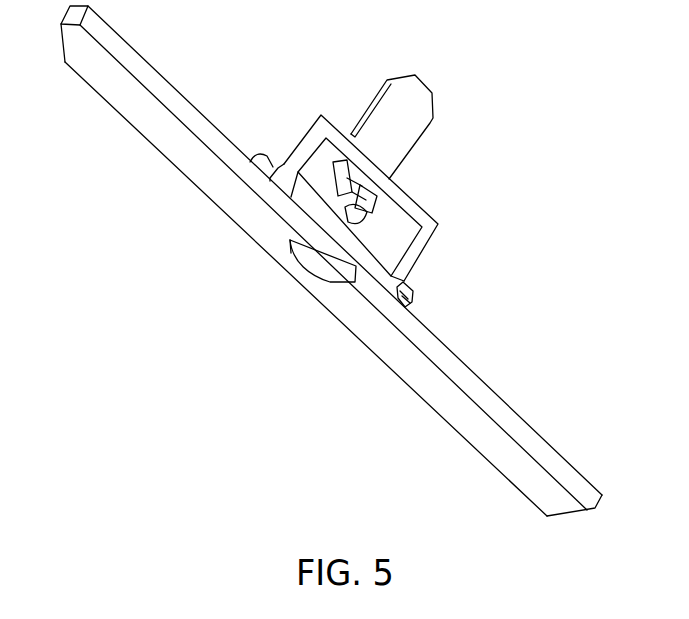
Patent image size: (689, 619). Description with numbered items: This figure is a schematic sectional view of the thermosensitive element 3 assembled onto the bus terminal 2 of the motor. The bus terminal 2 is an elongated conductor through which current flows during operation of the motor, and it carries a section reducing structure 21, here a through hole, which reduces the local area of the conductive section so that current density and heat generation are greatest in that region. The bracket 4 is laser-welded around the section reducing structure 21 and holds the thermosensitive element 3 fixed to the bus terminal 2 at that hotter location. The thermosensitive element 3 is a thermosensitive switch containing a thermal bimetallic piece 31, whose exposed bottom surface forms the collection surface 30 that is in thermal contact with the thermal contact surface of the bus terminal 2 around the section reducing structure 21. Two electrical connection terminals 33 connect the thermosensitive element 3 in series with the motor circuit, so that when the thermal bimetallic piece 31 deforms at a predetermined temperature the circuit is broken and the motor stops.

The bus terminal 2 is at (173, 148).
The section reducing structure 21 is at (286, 250).
The thermosensitive element 3 is at (417, 250).
The collection surface 30 is at (333, 250).
The thermal bimetallic piece 31 is at (357, 228).
The electrical connection terminals 33 is at (413, 108).
The bracket 4 is at (417, 290).